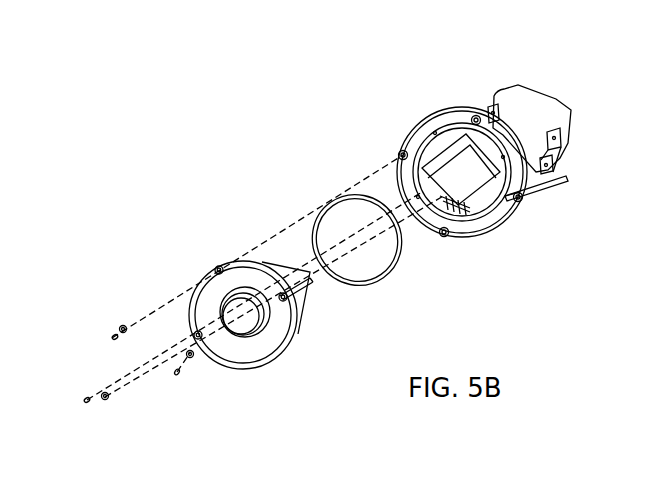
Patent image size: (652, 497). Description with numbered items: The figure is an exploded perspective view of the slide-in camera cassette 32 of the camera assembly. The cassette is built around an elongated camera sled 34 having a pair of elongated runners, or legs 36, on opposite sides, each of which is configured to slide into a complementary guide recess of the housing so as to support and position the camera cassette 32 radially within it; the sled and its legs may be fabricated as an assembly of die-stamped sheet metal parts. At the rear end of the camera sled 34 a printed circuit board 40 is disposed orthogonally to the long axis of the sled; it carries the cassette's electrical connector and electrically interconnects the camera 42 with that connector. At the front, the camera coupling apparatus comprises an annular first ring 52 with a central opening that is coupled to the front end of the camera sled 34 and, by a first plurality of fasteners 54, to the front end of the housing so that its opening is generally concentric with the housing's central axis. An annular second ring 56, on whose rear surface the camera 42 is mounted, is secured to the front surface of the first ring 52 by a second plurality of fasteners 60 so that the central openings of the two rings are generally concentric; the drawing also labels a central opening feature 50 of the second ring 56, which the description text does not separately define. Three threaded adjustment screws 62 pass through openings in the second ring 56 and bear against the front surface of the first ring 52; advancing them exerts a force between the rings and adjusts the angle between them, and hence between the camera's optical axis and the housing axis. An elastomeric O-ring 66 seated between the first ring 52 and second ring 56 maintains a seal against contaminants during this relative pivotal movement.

The camera cassette 32 is at (447, 272).
The camera sled 34 is at (563, 148).
The legs 36 is at (549, 186).
The printed circuit board 40 is at (537, 100).
The camera 42 is at (311, 297).
The bore 50 is at (243, 341).
The first ring 52 is at (499, 229).
The first plurality of fasteners 54 is at (399, 152).
The second ring 56 is at (278, 352).
The second plurality of fasteners 60 is at (120, 326).
The adjustment screws 62 is at (85, 398).
The O-ring 66 is at (382, 284).